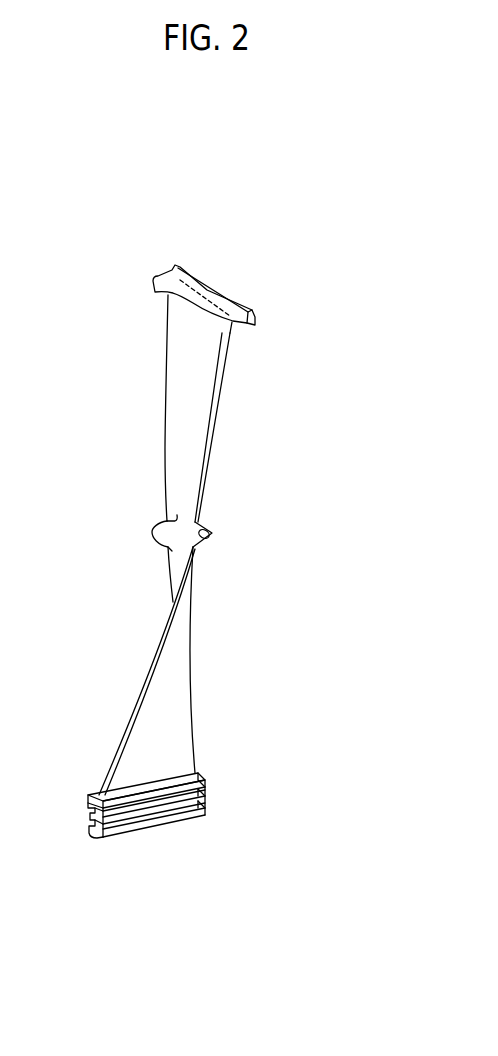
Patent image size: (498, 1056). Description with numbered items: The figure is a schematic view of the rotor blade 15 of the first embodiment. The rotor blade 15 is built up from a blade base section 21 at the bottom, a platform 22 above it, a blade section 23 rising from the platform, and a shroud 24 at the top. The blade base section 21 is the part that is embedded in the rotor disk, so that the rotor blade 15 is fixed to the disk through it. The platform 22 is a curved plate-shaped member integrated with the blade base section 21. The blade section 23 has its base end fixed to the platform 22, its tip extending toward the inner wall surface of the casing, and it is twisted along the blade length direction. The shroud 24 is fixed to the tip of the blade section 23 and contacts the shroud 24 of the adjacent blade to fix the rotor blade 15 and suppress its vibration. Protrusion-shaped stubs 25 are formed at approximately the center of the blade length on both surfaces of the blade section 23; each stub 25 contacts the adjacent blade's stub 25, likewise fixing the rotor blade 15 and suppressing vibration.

The rotor blade 15 is at (324, 506).
The blade base section 21 is at (155, 822).
The platform 22 is at (203, 775).
The blade section 23 is at (222, 300).
The shroud 24 is at (188, 275).
The stub 25 is at (152, 527).